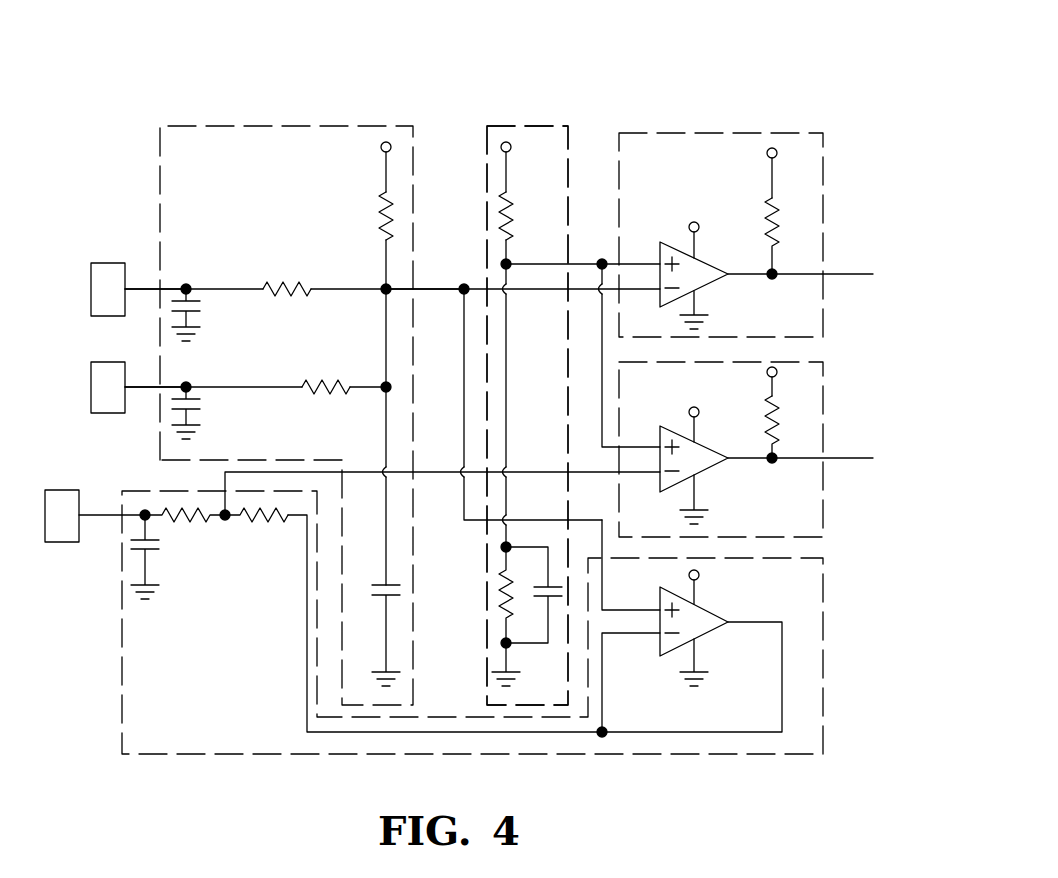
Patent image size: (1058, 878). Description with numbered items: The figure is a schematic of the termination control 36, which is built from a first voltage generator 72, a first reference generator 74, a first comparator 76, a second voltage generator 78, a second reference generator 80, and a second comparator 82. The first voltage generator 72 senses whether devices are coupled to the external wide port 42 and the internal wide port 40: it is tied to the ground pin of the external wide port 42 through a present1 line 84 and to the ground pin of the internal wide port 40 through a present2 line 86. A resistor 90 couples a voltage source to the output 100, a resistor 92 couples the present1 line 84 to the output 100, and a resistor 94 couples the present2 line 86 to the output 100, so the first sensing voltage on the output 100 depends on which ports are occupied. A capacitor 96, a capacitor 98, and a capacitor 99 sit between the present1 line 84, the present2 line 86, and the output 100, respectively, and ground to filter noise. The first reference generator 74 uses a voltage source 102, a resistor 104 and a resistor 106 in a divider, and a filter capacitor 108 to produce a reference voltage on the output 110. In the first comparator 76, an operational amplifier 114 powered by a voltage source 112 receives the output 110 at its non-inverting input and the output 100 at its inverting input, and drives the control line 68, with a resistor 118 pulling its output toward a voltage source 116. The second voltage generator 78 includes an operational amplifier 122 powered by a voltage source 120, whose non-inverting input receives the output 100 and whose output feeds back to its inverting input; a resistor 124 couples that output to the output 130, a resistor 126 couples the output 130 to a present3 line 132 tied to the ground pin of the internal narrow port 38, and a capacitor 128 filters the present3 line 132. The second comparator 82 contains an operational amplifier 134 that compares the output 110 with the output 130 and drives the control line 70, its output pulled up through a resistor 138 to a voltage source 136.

The termination control 36 is at (708, 64).
The internal narrow port 38 is at (79, 538).
The internal wide port 40 is at (91, 368).
The external wide port 42 is at (91, 313).
The control line 68 is at (840, 274).
The control line 70 is at (845, 460).
The first voltage generator 72 is at (205, 140).
The first reference generator 74 is at (555, 130).
The first comparator 76 is at (700, 142).
The second voltage generator 78 is at (122, 685).
The second reference generator 80 is at (527, 415).
The second comparator 82 is at (800, 378).
The present1 line 84 is at (145, 289).
The present2 line 86 is at (145, 387).
The resistor 90 is at (385, 218).
The resistor 92 is at (285, 285).
The resistor 94 is at (310, 382).
The capacitor 96 is at (200, 310).
The capacitor 98 is at (200, 412).
The capacitor 99 is at (393, 597).
The output 100 is at (462, 285).
The voltage source 102 is at (508, 150).
The resistor 104 is at (511, 218).
The resistor 106 is at (515, 580).
The capacitor 108 is at (540, 600).
The output 110 is at (598, 262).
The voltage source 112 is at (685, 224).
The operational amplifier 114 is at (702, 262).
The voltage source 116 is at (775, 140).
The resistor 118 is at (776, 216).
The voltage source 120 is at (700, 572).
The operational amplifier 122 is at (735, 618).
The resistor 124 is at (252, 520).
The resistor 126 is at (185, 520).
The capacitor 128 is at (158, 550).
The output 130 is at (225, 485).
The present3 line 132 is at (691, 407).
The operational amplifier 134 is at (703, 445).
The voltage source 136 is at (769, 367).
The resistor 138 is at (776, 406).